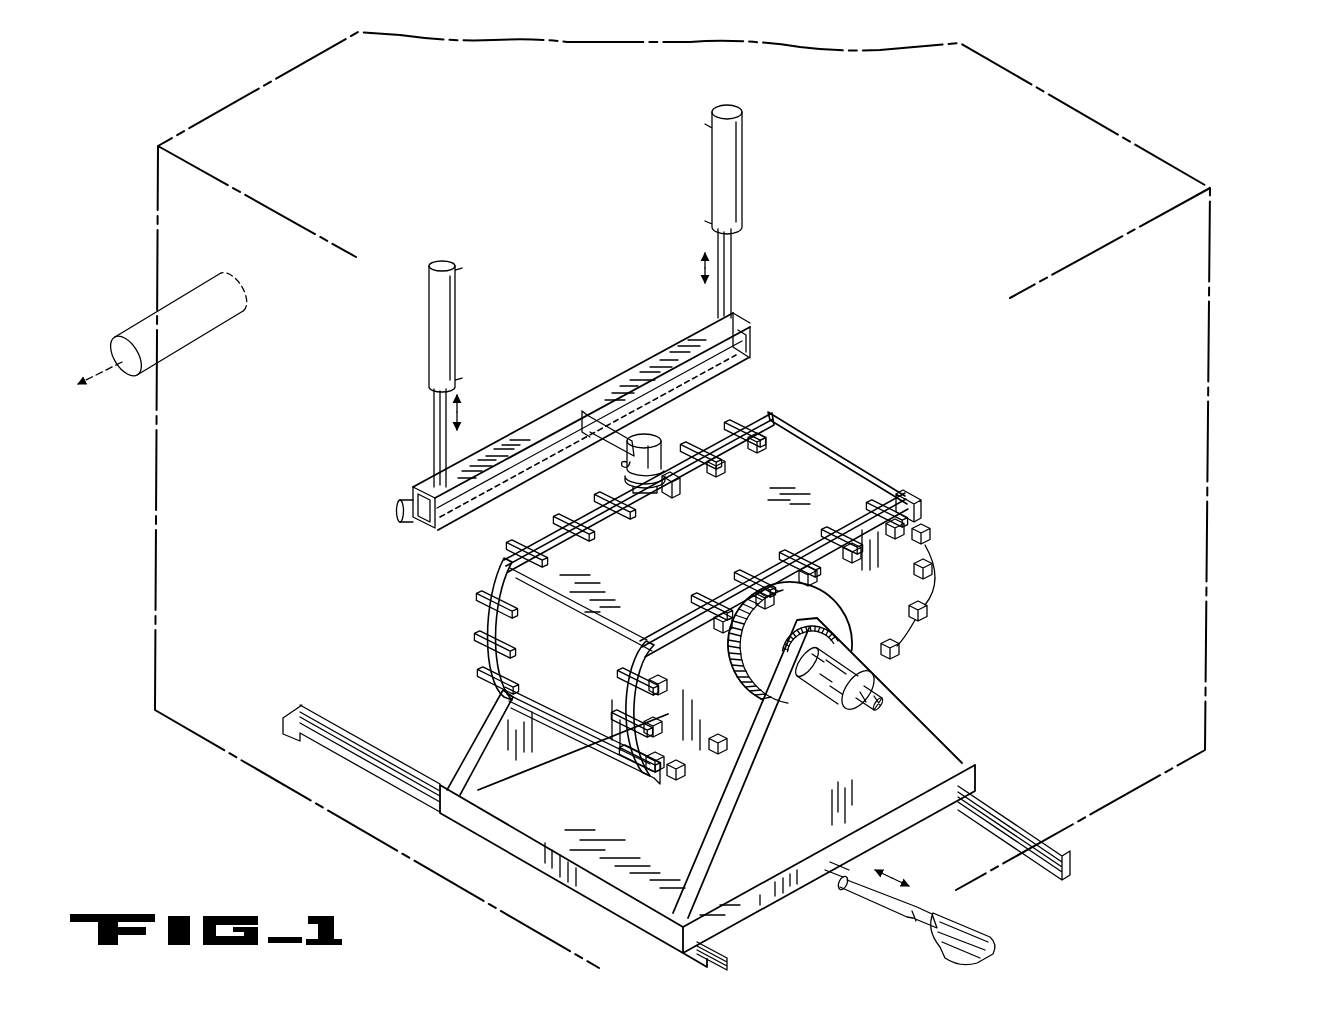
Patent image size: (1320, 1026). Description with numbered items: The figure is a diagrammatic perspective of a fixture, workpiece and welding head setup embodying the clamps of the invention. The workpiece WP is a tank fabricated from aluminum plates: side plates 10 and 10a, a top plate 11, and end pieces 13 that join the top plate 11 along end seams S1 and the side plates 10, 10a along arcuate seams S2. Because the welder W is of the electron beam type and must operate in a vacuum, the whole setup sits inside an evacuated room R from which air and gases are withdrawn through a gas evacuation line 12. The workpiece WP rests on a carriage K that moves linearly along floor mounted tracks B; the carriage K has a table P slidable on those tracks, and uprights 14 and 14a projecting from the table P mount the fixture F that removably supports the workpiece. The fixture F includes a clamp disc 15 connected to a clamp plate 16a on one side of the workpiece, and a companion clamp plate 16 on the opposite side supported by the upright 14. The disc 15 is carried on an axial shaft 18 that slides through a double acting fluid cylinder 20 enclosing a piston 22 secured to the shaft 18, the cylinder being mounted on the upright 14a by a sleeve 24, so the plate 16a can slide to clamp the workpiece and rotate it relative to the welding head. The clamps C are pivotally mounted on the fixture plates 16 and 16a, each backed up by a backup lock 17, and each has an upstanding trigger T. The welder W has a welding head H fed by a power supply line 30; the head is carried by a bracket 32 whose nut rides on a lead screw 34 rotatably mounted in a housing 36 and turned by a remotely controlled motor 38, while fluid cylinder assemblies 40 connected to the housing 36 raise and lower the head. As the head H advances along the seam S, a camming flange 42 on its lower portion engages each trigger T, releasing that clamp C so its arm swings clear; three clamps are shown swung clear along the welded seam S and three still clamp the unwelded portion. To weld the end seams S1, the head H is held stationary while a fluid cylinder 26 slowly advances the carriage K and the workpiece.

The evacuated room R is at (1210, 212).
The gas evacuation line 12 is at (158, 310).
The fluid cylinder assemblies 40 is at (456, 296).
The welder W is at (582, 414).
The housing 36 is at (536, 418).
The lead screw 34 is at (752, 360).
The motor 38 is at (397, 513).
The bracket 32 is at (618, 420).
The welding head H is at (663, 435).
The power supply line 30 is at (628, 463).
The camming flange 42 is at (653, 488).
The seam S is at (540, 543).
The trigger T is at (757, 430).
The clamps C is at (708, 463).
The workpiece WP is at (751, 595).
The side plate 10 is at (778, 420).
The top plate 11 is at (800, 447).
The end pieces 13 is at (860, 463).
The side plate 10a is at (912, 500).
The backup lock 17 is at (920, 527).
The end seams S1 is at (574, 600).
The arcuate seams S2 is at (489, 594).
The clamp plate 16 is at (504, 571).
The clamp plate 16a is at (917, 553).
The fixture F is at (930, 585).
The clamp disc 15 is at (828, 592).
The sleeve 24 is at (815, 648).
The fluid cylinder 20 is at (872, 680).
The axial shaft 18 is at (884, 706).
The piston 22 is at (805, 684).
The upright 14 is at (480, 728).
The upright 14a is at (780, 835).
The carriage K is at (729, 840).
The table P is at (518, 850).
The tracks B is at (300, 714).
The fluid cylinder 26 is at (962, 920).